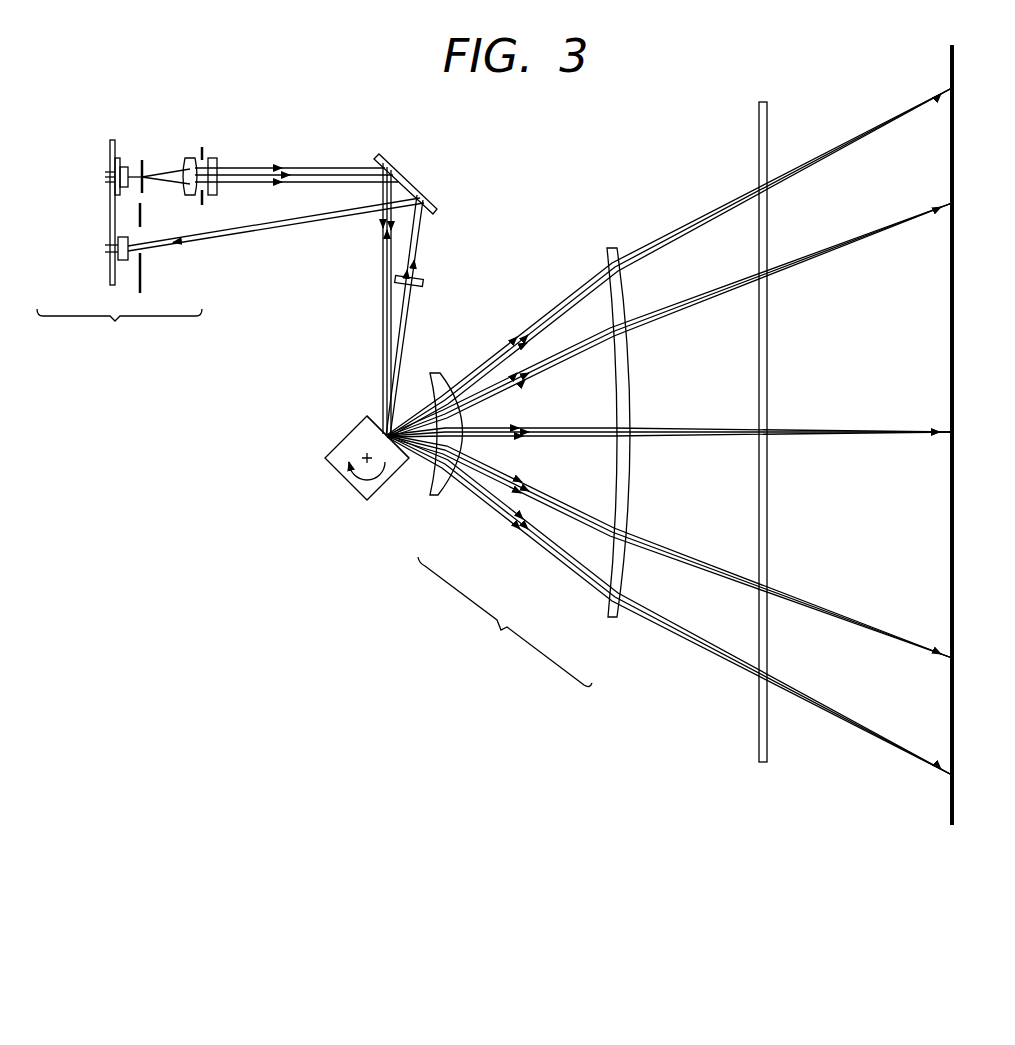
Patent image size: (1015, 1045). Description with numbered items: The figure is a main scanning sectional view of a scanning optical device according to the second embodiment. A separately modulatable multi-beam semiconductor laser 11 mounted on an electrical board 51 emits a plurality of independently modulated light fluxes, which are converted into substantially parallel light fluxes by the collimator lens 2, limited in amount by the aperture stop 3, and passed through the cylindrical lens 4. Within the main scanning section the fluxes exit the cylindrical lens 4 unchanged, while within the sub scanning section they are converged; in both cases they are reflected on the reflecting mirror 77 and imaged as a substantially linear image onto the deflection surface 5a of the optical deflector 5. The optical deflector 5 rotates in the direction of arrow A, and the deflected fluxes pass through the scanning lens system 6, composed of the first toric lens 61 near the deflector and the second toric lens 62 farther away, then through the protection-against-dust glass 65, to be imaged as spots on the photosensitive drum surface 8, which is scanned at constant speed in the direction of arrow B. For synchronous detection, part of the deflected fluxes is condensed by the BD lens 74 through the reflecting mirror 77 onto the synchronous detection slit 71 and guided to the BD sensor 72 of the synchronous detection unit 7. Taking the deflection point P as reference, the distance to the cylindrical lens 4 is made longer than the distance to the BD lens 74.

The collimator lens 2 is at (187, 158).
The aperture stop 3 is at (203, 147).
The cylindrical lens 4 is at (216, 163).
The optical deflector 5 is at (363, 490).
The deflection surface 5a is at (372, 413).
The scanning lens system 6 is at (505, 622).
The synchronous detection unit 7 is at (119, 330).
The photosensitive drum surface 8 is at (955, 797).
The multi-beam semiconductor laser 11 is at (118, 192).
The electrical board 51 is at (110, 152).
The first toric lens 61 is at (435, 497).
The second toric lens 62 is at (610, 620).
The protection-against-dust glass 65 is at (768, 753).
The synchronous detection slit 71 is at (140, 273).
The synchronous detection element 72 is at (118, 259).
The synchronous detection optical element 74 is at (423, 281).
The reflecting mirror 77 is at (413, 190).
The deflection point P is at (382, 432).
The arrow A is at (375, 478).
The arrow B is at (972, 83).